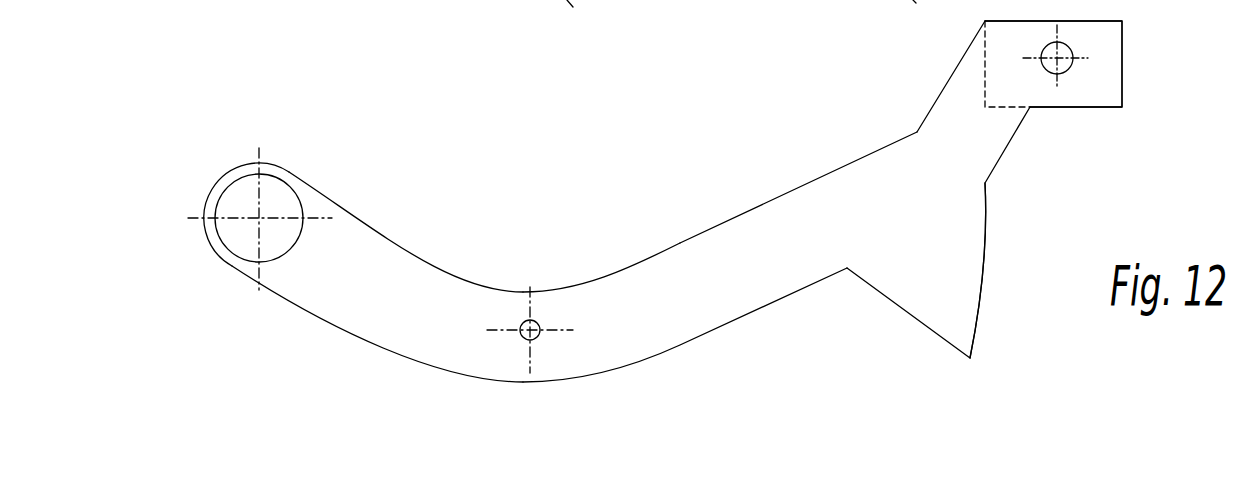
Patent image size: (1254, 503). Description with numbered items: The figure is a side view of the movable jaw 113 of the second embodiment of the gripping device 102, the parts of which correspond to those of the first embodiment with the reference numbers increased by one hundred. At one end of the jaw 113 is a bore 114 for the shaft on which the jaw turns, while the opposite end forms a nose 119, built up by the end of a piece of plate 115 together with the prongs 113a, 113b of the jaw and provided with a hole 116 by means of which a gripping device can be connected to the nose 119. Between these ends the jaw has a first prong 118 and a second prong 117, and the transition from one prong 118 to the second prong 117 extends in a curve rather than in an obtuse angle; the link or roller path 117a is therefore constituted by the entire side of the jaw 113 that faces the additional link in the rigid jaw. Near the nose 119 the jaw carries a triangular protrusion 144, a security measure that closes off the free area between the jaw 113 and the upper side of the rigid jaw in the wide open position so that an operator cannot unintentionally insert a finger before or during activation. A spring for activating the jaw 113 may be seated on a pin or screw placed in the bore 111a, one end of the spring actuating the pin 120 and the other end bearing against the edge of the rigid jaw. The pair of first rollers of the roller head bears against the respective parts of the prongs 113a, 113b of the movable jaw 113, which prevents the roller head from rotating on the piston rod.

The assembly 102 is at (581, 24).
The bore 111a is at (916, 20).
The movable jaw 113 is at (210, 170).
The prong of the movable jaw 113a is at (318, 225).
The prong of the movable jaw 113b is at (318, 285).
The bore 114 is at (288, 200).
The piece of plate 115 is at (1023, 80).
The hole 116 is at (1065, 72).
The second prong 117 is at (782, 230).
The roller path 117a is at (672, 247).
The first prong 118 is at (425, 297).
The nose 119 is at (1110, 57).
The pin 120 is at (535, 323).
The triangular protrusion 144 is at (925, 267).